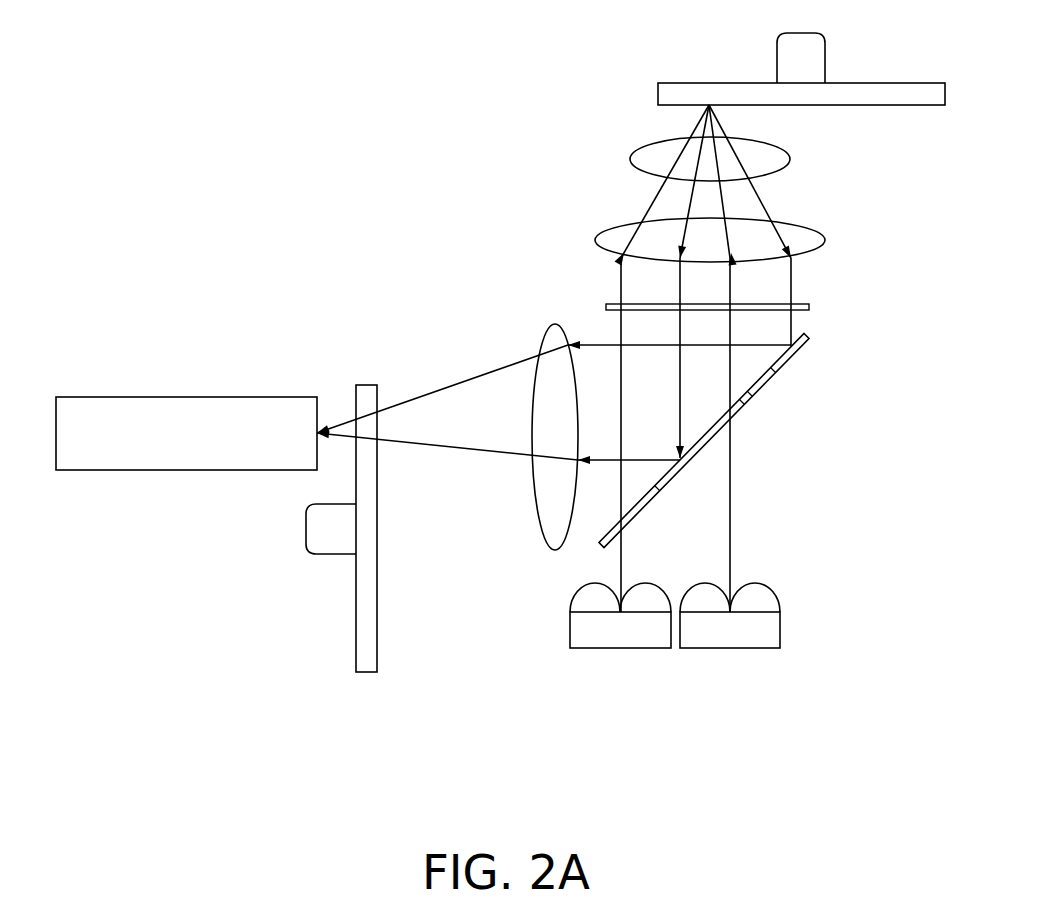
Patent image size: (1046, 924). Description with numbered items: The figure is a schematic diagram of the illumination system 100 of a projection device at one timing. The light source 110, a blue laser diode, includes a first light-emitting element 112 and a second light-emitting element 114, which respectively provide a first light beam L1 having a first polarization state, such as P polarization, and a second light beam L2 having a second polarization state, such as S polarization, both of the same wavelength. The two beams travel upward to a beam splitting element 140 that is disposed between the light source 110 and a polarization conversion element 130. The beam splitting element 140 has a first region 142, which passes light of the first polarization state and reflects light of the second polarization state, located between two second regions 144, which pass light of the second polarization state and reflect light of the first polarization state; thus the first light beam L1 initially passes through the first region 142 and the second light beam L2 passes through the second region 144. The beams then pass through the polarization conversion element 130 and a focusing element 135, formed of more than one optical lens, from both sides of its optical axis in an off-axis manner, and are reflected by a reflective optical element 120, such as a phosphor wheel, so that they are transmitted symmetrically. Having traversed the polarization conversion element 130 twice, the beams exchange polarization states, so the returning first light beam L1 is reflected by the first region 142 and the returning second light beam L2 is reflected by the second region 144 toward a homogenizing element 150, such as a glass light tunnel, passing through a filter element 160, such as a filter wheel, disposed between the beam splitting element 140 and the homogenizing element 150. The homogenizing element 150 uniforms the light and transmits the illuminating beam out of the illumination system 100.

The illumination system 100 is at (829, 767).
The light source 110 is at (675, 671).
The first light-emitting element 112 is at (730, 647).
The second light-emitting element 114 is at (643, 637).
The reflective optical element 120 is at (875, 83).
The polarization conversion element 130 is at (803, 305).
The focusing element 135 is at (640, 159).
The beam splitting element 140 is at (771, 441).
The first region 142 is at (742, 408).
The second region 144 is at (773, 370).
The homogenizing element 150 is at (188, 397).
The filter element 160 is at (368, 385).
The first light beam L1 is at (705, 160).
The second light beam L2 is at (762, 205).